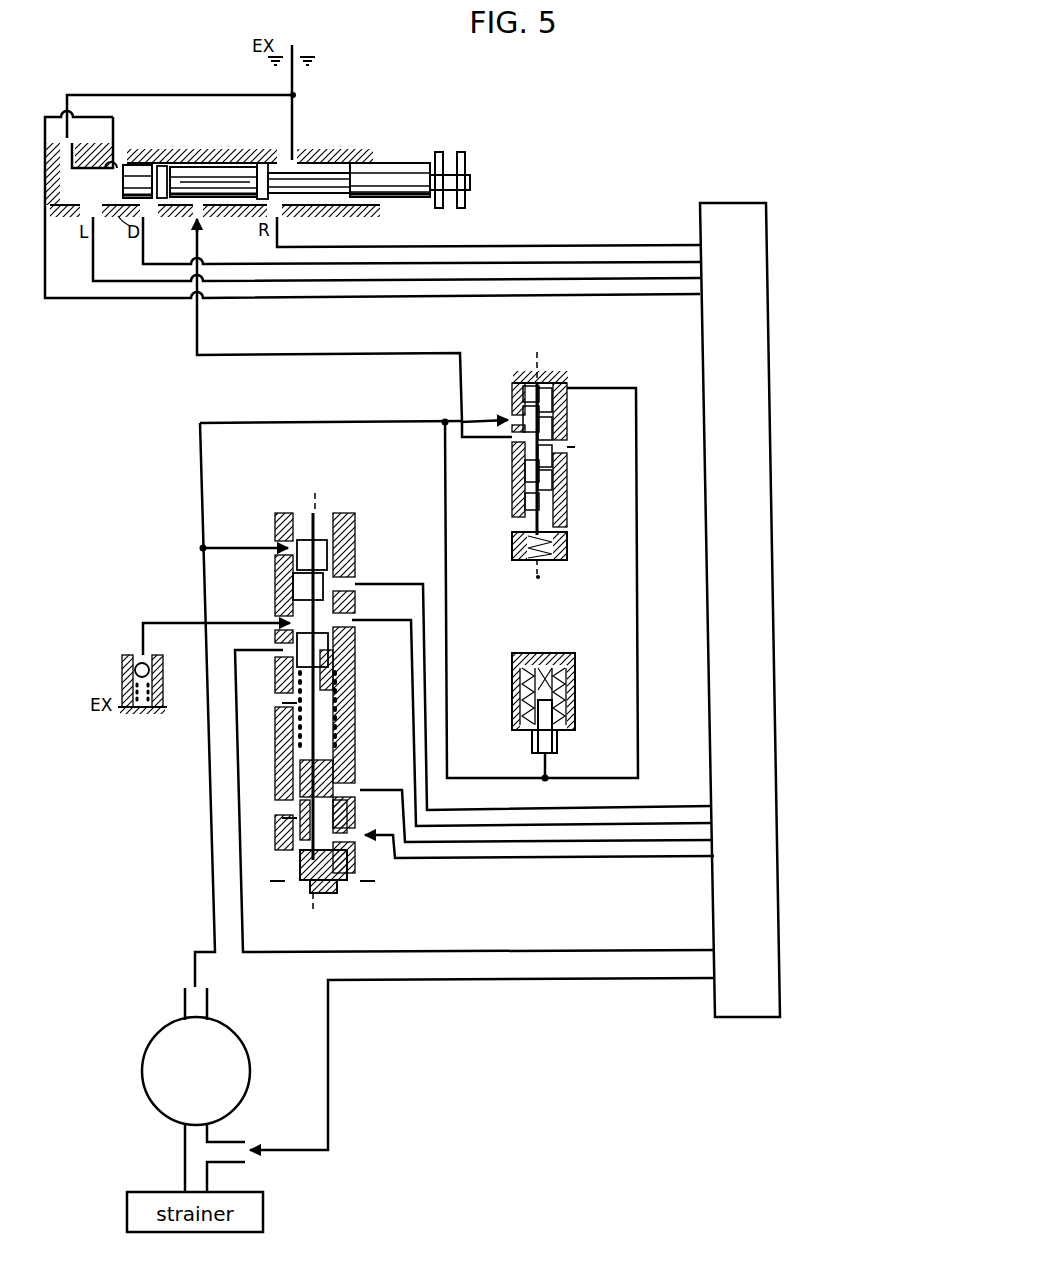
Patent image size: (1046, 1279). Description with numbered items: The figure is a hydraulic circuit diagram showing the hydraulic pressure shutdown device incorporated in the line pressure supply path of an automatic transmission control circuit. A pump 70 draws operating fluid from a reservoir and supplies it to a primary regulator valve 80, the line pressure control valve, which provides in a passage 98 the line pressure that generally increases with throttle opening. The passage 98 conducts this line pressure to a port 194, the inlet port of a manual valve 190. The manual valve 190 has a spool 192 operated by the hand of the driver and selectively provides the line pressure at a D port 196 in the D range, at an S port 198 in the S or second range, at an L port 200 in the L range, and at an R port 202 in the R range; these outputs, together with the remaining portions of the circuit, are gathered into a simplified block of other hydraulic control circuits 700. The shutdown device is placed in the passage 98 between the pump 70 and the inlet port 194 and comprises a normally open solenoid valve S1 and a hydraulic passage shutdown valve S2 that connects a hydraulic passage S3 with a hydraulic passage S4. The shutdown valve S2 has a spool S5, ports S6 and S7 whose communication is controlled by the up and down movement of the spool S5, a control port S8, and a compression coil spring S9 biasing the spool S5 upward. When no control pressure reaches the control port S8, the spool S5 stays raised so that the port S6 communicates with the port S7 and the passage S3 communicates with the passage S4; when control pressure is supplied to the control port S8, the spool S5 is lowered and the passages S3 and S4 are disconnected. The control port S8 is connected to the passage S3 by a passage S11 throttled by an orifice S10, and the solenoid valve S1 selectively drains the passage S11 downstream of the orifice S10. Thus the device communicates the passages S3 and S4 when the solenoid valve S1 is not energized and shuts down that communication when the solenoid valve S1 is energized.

The pump 70 is at (158, 1028).
The primary regulator valve 80 is at (344, 510).
The passage 98 is at (197, 323).
The manual valve 190 is at (398, 160).
The spool 192 is at (408, 203).
The port 194 is at (198, 214).
The D port 196 is at (144, 212).
The S port 198 is at (118, 156).
The L port 200 is at (372, 204).
The R port 202 is at (284, 214).
The other hydraulic control circuits 700 is at (773, 466).
The solenoid valve S1 is at (553, 655).
The hydraulic passage shutdown valve S2 is at (541, 376).
The hydraulic passage S3 is at (286, 421).
The hydraulic passage S4 is at (356, 354).
The spool S5 is at (560, 405).
The port S6 is at (512, 419).
The port S7 is at (512, 440).
The control port S8 is at (568, 388).
The compression coil spring S9 is at (552, 530).
The orifice S10 is at (514, 775).
The passage S11 is at (447, 628).